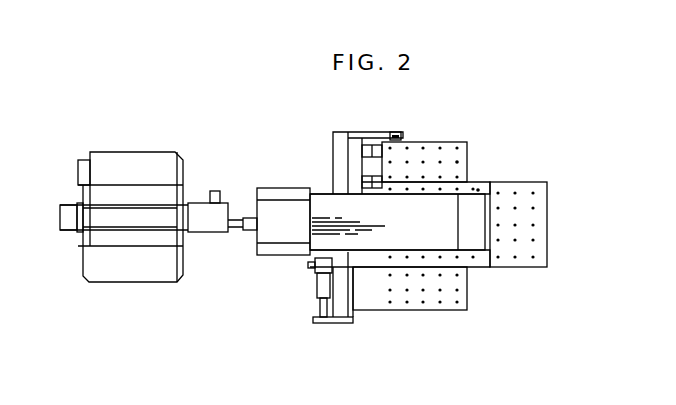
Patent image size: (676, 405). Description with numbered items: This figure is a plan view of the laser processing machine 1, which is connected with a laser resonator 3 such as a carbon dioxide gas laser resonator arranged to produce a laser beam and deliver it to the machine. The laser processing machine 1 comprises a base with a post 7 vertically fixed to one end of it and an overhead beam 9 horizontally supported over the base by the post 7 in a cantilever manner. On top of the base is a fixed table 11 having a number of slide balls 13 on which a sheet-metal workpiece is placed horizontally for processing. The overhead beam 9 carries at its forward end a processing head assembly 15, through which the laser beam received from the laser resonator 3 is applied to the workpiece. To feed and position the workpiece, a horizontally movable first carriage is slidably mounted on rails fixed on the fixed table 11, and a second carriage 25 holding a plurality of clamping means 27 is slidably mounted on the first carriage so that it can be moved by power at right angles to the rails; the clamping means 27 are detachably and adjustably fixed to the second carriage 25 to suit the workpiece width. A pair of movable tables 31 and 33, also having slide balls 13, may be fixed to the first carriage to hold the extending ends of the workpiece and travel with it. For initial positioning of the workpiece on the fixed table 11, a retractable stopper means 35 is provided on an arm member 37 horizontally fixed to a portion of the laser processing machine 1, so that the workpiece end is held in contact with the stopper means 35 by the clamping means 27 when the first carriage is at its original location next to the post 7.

The laser processing machine 1 is at (319, 228).
The laser resonator 3 is at (183, 167).
The post 7 is at (255, 252).
The overhead beam 9 is at (325, 245).
The fixed table 11 is at (473, 263).
The slide balls 13 is at (459, 162).
The processing head assembly 15 is at (486, 205).
The second carriage 25 is at (342, 310).
The clamping means 27 is at (365, 153).
The movable table 31 is at (448, 142).
The movable table 33 is at (447, 303).
The retractable stopper means 35 is at (398, 133).
The arm member 37 is at (368, 133).